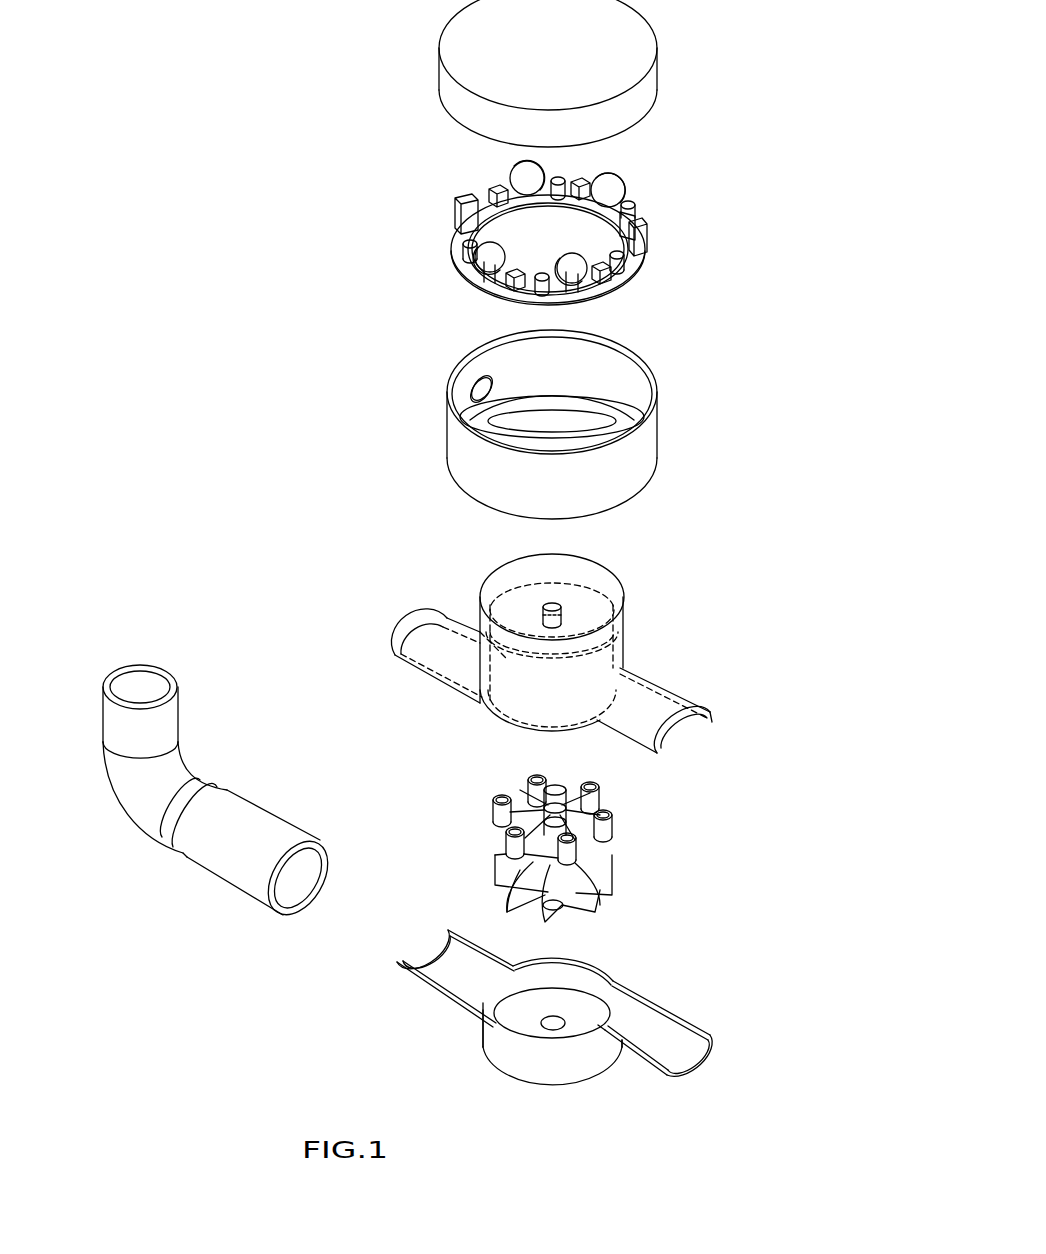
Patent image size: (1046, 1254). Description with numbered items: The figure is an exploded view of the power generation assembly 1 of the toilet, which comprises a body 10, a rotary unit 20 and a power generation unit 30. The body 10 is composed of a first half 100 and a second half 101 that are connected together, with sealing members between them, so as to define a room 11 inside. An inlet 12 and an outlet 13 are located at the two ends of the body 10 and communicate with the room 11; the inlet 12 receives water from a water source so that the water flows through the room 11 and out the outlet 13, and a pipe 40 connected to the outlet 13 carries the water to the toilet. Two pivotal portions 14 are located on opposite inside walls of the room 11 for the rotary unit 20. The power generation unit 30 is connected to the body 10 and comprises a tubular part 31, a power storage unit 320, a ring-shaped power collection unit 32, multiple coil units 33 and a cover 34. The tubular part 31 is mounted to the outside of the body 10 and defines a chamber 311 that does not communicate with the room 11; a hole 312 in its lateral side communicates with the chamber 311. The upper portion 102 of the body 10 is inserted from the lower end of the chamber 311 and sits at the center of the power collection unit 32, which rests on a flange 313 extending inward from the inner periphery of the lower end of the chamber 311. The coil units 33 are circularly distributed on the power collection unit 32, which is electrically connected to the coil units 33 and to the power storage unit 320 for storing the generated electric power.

The power generation assembly 1 is at (303, 398).
The body 10 is at (672, 693).
The first half 100 is at (617, 655).
The second half 101 is at (570, 1072).
The upper portion 102 is at (617, 637).
The room 11 is at (609, 819).
The inlet 12 is at (672, 733).
The outlet 13 is at (425, 628).
The pivotal portion 14 is at (545, 607).
The rotary unit 20 is at (600, 857).
The power generation unit 30 is at (688, 478).
The tubular part 31 is at (457, 460).
The chamber 311 is at (622, 373).
The hole 312 is at (478, 378).
The flange 313 is at (617, 424).
The power collection unit 32 is at (630, 272).
The power storage unit 320 is at (637, 212).
The coil units 33 is at (462, 212).
The cover 34 is at (642, 33).
The pipe 40 is at (138, 798).